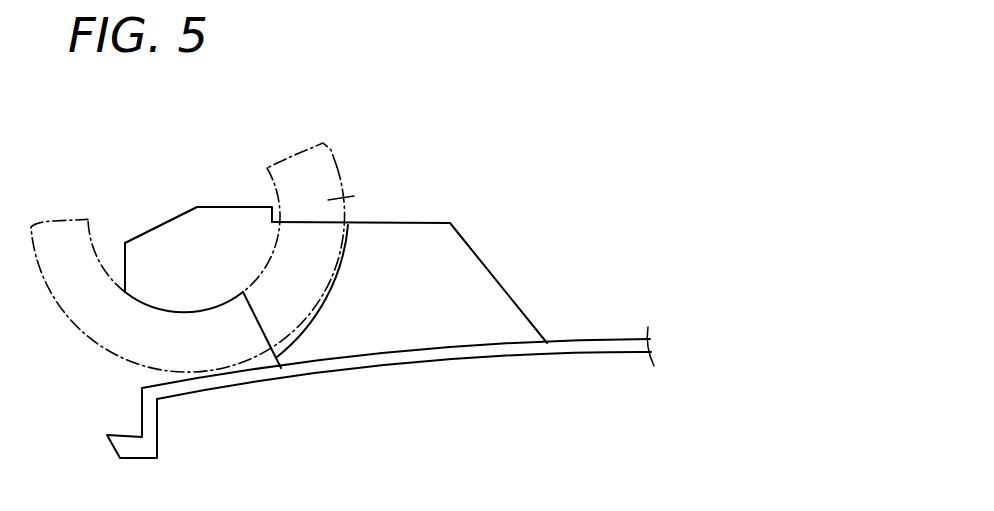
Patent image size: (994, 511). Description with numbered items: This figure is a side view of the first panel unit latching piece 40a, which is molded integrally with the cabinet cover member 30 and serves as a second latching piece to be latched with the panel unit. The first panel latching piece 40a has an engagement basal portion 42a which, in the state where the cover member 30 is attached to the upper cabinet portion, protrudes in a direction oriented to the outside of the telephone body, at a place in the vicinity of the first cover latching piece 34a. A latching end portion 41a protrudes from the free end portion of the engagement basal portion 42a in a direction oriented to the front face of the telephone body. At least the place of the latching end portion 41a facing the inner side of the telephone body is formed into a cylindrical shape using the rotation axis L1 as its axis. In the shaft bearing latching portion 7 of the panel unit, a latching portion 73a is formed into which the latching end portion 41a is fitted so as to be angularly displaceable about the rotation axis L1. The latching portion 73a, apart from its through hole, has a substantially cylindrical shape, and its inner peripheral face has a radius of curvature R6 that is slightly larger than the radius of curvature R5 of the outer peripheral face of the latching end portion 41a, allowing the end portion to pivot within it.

The shaft bearing latching portion 7 is at (352, 125).
The first panel unit latching piece 40a is at (361, 241).
The latching end portion 41a is at (227, 218).
The engagement basal portion 42a is at (487, 300).
The latching portion 73a is at (343, 197).
The cabinet cover member 30 is at (617, 347).
The first cover latching piece 34a is at (147, 442).
The radius of curvature of outer peripheral face of latching end portion R5 is at (197, 312).
The radius of curvature of inner peripheral face of latching portion R6 is at (97, 237).
The rotation axis L1 is at (182, 225).